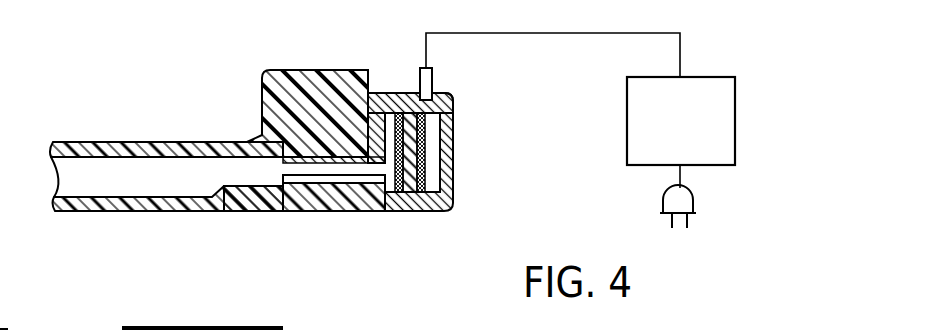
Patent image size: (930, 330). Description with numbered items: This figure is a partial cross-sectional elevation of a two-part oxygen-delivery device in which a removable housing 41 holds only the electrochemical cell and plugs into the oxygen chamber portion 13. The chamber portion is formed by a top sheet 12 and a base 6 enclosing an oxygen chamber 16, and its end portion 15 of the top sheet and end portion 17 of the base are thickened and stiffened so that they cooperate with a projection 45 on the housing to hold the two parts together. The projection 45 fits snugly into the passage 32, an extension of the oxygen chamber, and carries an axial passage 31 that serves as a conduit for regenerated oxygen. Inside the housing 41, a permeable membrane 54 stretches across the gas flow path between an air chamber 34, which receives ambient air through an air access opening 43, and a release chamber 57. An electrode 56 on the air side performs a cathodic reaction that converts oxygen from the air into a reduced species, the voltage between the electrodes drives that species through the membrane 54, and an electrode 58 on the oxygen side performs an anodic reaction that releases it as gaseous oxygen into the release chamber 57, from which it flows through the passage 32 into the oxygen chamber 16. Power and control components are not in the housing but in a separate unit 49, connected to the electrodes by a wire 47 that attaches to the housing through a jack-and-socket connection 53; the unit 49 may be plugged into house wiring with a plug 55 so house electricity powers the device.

The base 6 is at (93, 203).
The top sheet 12 is at (133, 150).
The oxygen chamber portion 13 is at (232, 86).
The end portion of top sheet 15 is at (295, 70).
The oxygen chamber 16 is at (154, 187).
The end portion of base 17 is at (267, 197).
The axial passage 31 is at (333, 173).
The passage 32 is at (237, 168).
The air chamber 34 is at (437, 180).
The removable housing 41 is at (453, 105).
The air access opening 43 is at (445, 158).
The projection 45 is at (312, 182).
The wire 47 is at (615, 32).
The separate unit 49 is at (698, 137).
The jack-and-socket connection 53 is at (432, 77).
The permeable membrane 54 is at (410, 190).
The plug 55 is at (693, 197).
The electrode 56 is at (443, 200).
The release chamber 57 is at (393, 117).
The electrode 58 is at (392, 163).